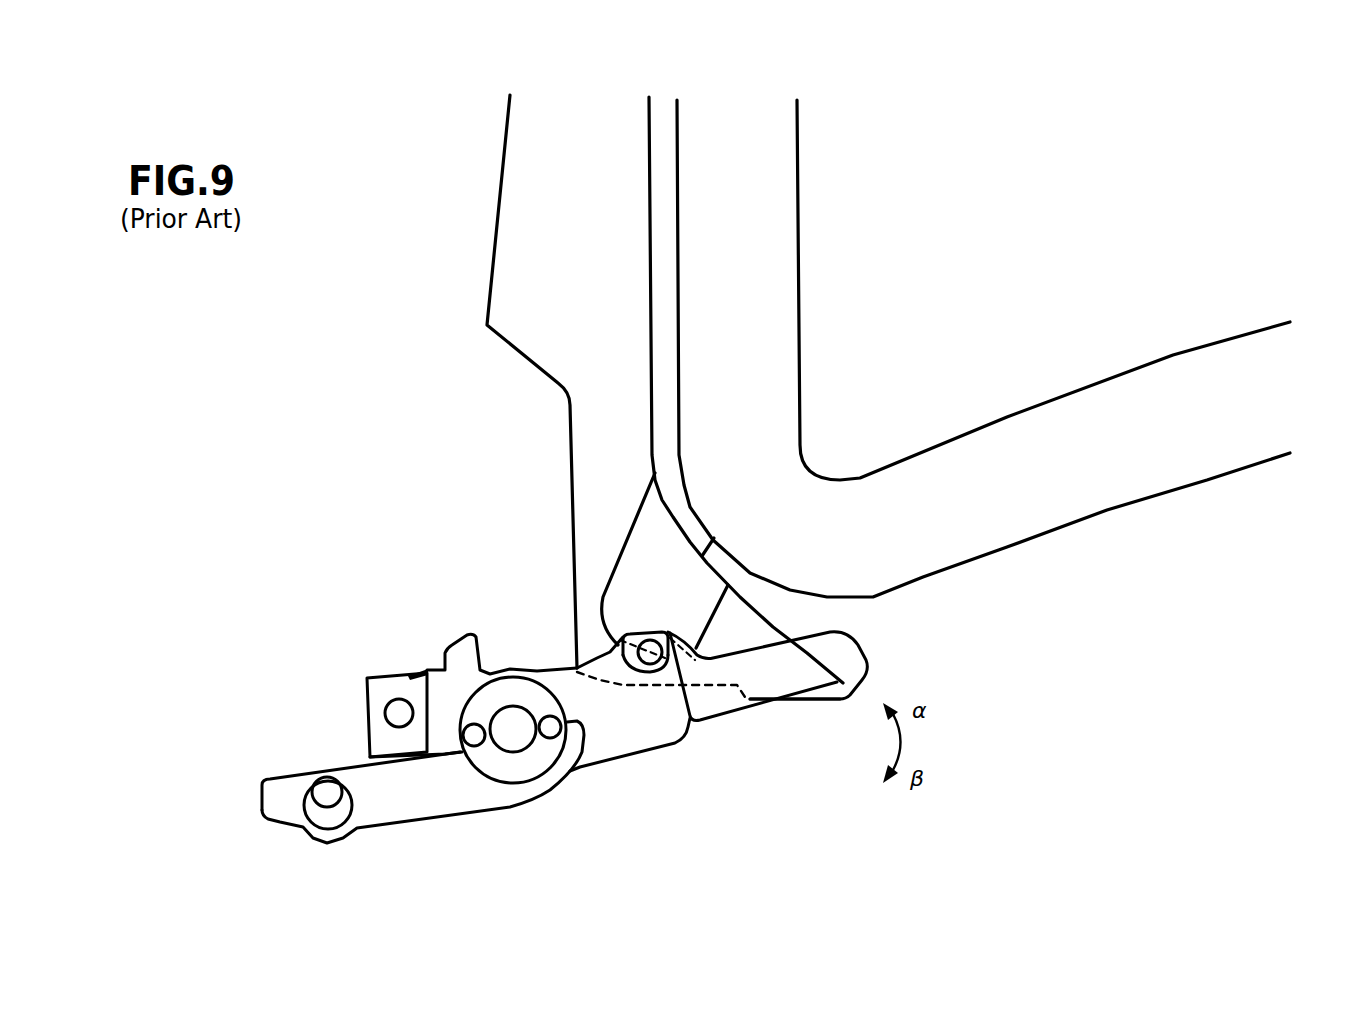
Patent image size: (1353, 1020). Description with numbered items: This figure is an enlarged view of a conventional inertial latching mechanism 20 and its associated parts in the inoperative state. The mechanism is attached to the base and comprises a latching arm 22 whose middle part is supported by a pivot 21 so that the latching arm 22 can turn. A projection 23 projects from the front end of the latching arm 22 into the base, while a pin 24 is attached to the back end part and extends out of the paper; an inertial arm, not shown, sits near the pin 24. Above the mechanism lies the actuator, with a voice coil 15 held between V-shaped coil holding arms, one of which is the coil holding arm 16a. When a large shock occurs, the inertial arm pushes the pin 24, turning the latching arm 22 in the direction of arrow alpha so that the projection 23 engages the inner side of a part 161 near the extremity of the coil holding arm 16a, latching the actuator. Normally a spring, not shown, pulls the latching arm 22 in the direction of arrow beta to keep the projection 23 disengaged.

The voice coil 15 is at (1202, 465).
The coil holding arm 16a is at (515, 273).
The inertial latching mechanism 20 is at (330, 615).
The pivot 21 is at (510, 722).
The latching arm 22 is at (630, 733).
The projection 23 is at (848, 656).
The part 161 is at (807, 697).
The pin 24 is at (327, 793).